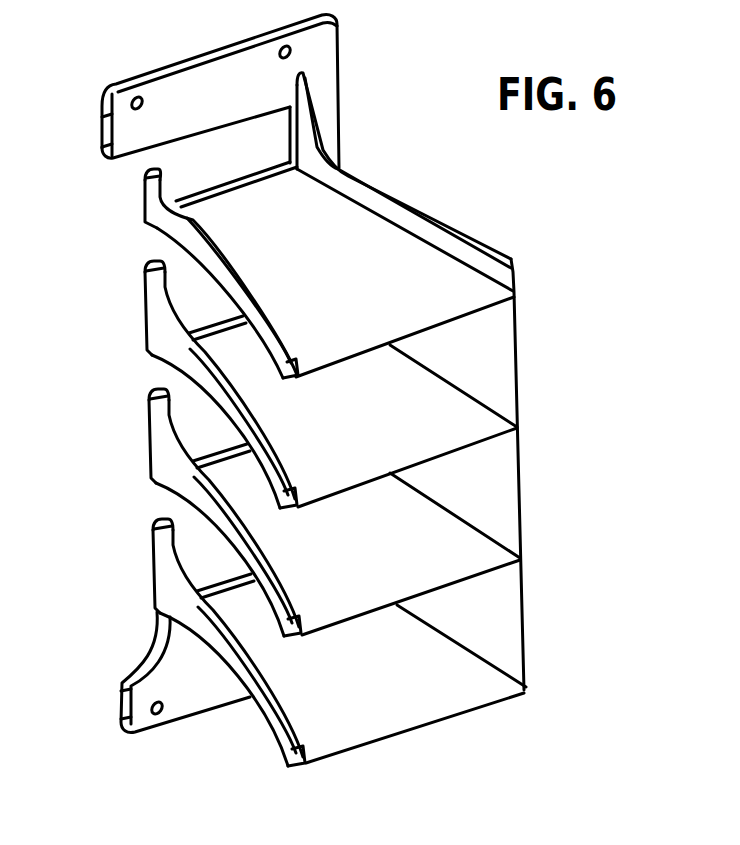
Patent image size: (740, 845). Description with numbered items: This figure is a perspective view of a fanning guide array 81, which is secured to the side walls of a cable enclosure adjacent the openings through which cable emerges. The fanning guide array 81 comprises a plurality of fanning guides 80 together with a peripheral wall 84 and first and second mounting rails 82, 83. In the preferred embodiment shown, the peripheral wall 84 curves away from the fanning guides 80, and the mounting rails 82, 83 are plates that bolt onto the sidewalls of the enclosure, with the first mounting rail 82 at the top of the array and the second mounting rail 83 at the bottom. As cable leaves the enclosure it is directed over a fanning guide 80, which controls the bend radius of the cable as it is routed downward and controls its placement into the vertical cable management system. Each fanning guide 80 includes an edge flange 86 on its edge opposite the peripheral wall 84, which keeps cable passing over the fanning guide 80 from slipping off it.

The fanning guide 80 is at (450, 290).
The fanning guide array 81 is at (128, 437).
The first mounting rail 82 is at (238, 80).
The second mounting rail 83 is at (190, 697).
The peripheral wall 84 is at (503, 373).
The edge flange 86 is at (213, 258).